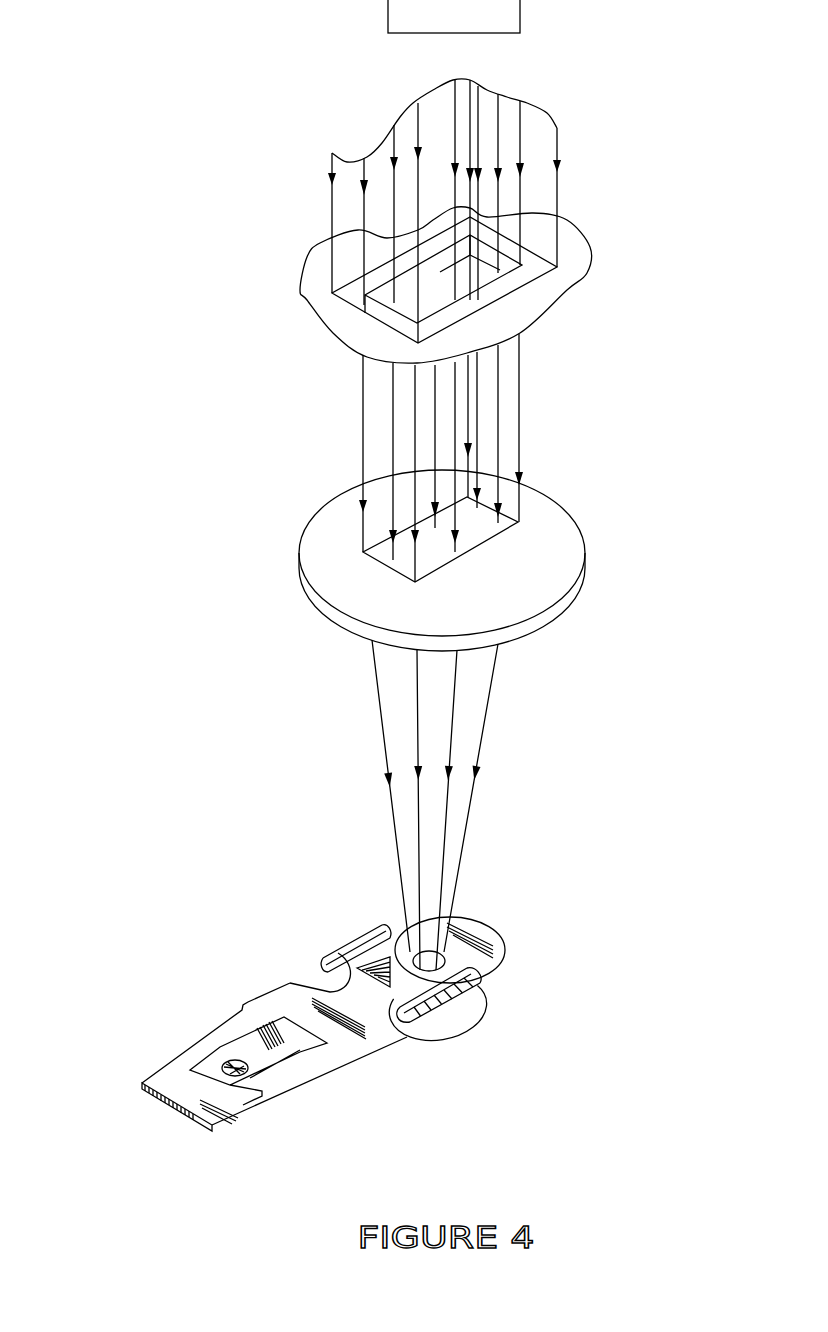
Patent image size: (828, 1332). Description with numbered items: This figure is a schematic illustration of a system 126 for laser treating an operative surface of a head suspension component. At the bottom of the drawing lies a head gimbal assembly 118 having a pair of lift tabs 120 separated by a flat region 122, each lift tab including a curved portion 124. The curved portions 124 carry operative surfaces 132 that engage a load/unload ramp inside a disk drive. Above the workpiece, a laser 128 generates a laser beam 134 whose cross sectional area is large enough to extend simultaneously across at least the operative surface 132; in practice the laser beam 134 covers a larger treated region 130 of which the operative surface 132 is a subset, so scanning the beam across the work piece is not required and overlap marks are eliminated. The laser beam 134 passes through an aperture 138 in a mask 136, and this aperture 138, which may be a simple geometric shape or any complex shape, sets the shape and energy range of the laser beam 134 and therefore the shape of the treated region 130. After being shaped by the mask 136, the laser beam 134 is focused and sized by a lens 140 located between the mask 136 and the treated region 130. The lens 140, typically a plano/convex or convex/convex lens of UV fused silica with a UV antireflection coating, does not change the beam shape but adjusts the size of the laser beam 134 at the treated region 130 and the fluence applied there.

The head gimbal assembly 118 is at (168, 1045).
The lift tabs 120 is at (407, 1007).
The flat region 122 is at (410, 932).
The curved portion 124 is at (325, 963).
The system 126 is at (328, 118).
The laser 128 is at (454, 16).
The treated region 130 is at (440, 1037).
The operative surface 132 is at (476, 995).
The laser beam 134 is at (544, 158).
The mask 136 is at (563, 282).
The aperture 138 is at (408, 300).
The lens 140 is at (545, 548).